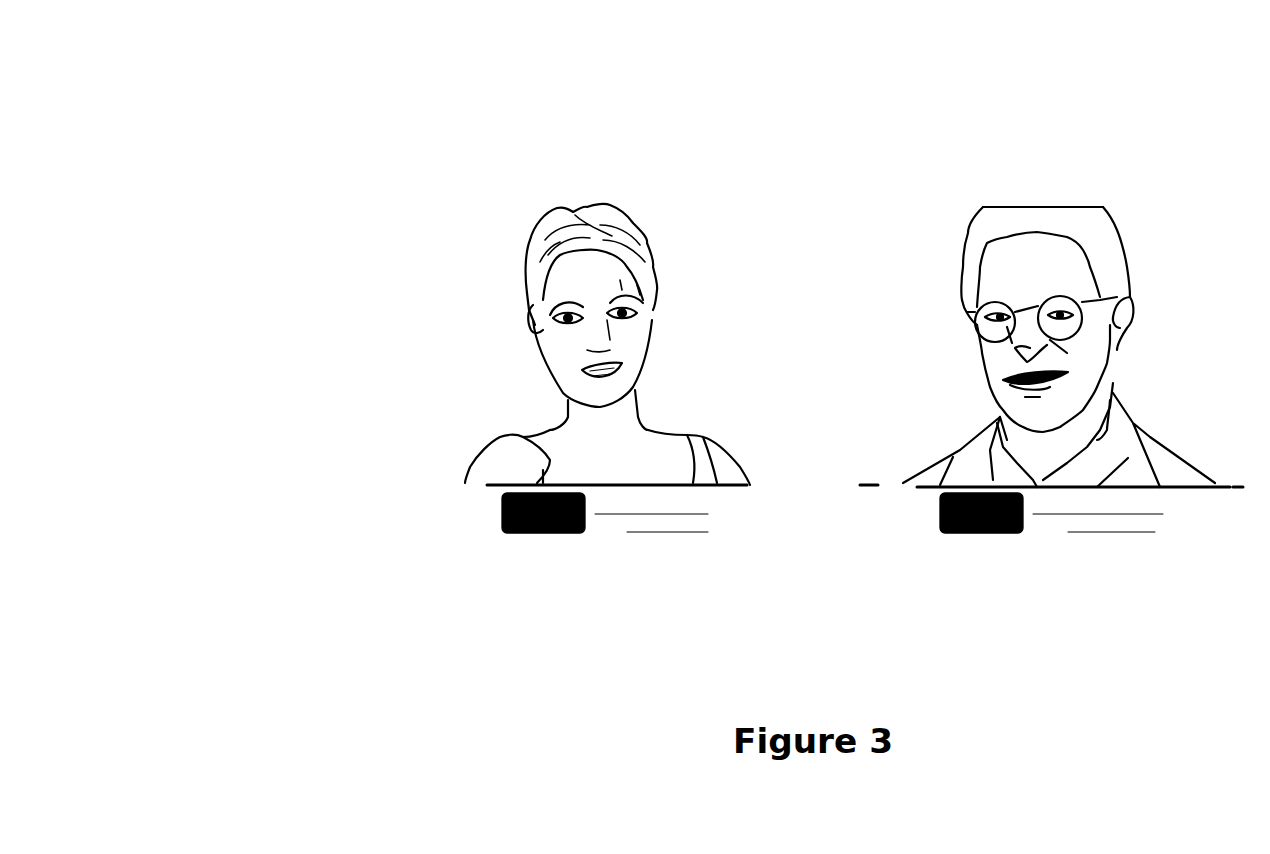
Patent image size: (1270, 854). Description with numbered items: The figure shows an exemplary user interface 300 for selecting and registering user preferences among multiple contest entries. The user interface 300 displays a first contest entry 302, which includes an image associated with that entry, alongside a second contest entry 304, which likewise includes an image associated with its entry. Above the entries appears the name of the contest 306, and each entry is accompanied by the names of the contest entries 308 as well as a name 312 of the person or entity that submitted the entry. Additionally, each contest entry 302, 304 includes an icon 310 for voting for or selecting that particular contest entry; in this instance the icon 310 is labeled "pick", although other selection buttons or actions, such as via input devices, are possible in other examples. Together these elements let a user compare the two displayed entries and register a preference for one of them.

The user interface 300 is at (335, 312).
The first contest entry 302 is at (508, 223).
The second contest entry 304 is at (1147, 223).
The name of the contest 306 is at (352, 142).
The names of the contest entries 308 is at (650, 170).
The icon 310 is at (570, 533).
The name of the submitter 312 is at (663, 533).